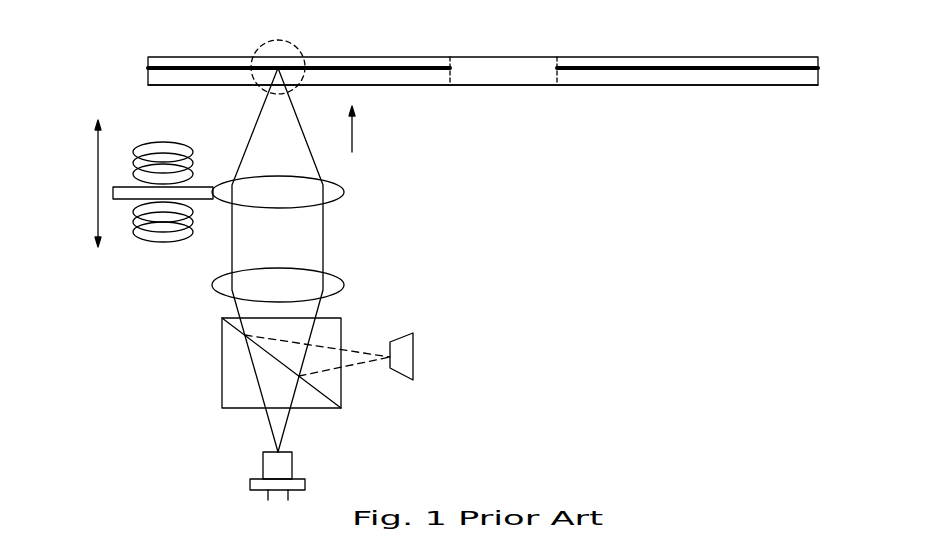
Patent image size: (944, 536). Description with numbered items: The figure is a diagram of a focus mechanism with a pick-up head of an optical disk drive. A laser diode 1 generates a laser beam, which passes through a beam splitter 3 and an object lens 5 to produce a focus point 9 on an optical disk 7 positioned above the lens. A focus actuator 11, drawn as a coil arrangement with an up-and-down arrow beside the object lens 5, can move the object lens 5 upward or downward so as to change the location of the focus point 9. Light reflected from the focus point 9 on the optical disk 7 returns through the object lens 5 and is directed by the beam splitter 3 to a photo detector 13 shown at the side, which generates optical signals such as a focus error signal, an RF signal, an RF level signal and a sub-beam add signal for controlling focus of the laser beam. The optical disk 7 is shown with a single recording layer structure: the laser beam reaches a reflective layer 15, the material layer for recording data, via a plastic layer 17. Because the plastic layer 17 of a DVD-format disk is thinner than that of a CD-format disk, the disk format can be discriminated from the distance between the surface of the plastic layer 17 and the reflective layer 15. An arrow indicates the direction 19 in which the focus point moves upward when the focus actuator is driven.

The laser diode 1 is at (293, 468).
The beam splitter 3 is at (222, 375).
The object lens 5 is at (345, 190).
The optical disk 7 is at (505, 56).
The focus point 9 is at (298, 48).
The focus actuator 11 is at (98, 165).
The photo detector 13 is at (415, 350).
The reflective layer 15 is at (715, 65).
The plastic layer 17 is at (647, 80).
The direction 19 is at (355, 128).